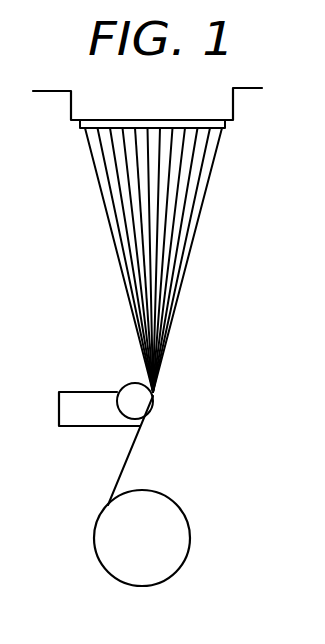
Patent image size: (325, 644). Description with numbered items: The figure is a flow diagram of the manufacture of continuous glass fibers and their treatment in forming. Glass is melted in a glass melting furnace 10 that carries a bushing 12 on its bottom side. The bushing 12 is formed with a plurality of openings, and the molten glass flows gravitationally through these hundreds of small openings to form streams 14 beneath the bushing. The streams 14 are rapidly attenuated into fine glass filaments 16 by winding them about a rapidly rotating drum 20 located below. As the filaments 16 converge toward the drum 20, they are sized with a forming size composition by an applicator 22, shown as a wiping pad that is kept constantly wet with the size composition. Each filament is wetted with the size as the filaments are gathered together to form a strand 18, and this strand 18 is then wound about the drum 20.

The glass melting furnace 10 is at (243, 80).
The bushing 12 is at (240, 110).
The streams 14 is at (127, 133).
The glass filaments 16 is at (148, 258).
The strand 18 is at (137, 448).
The drum 20 is at (172, 510).
The applicator 22 is at (138, 392).